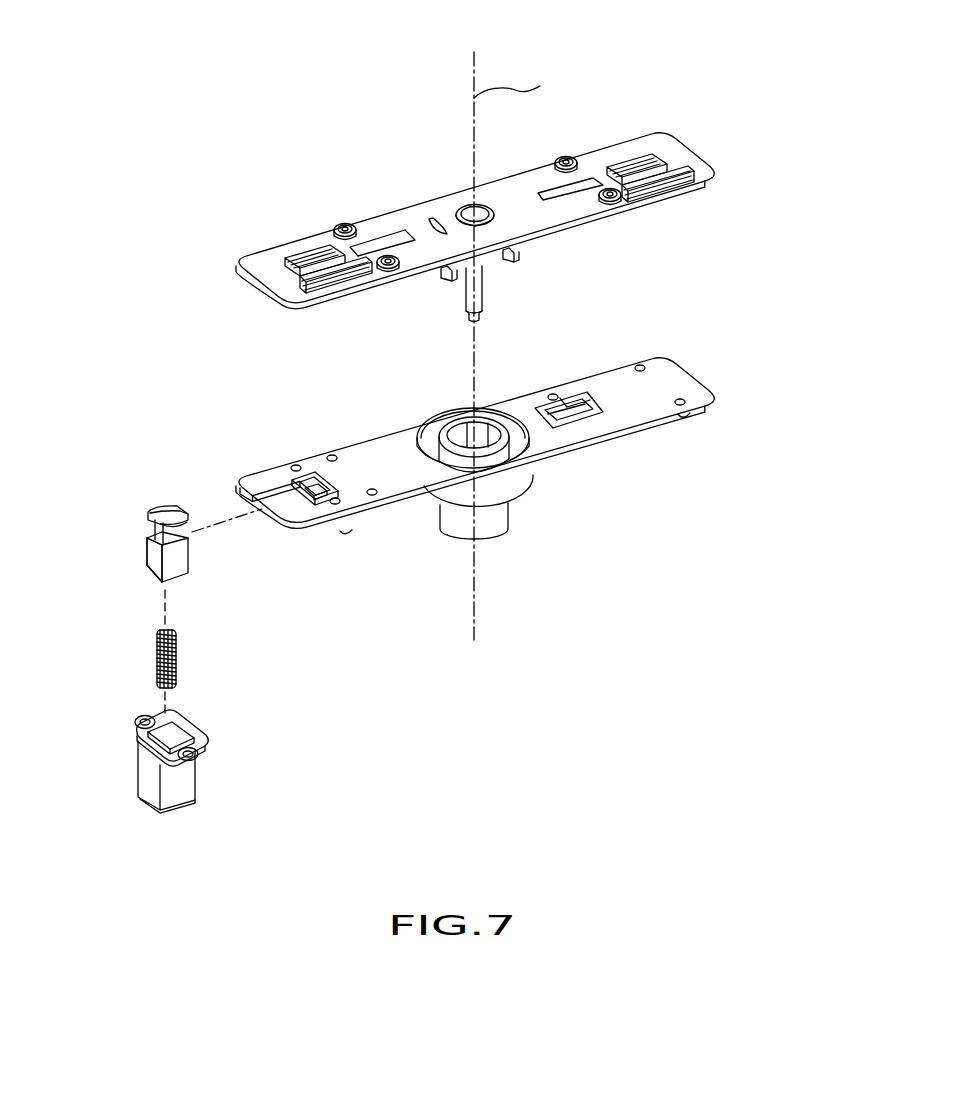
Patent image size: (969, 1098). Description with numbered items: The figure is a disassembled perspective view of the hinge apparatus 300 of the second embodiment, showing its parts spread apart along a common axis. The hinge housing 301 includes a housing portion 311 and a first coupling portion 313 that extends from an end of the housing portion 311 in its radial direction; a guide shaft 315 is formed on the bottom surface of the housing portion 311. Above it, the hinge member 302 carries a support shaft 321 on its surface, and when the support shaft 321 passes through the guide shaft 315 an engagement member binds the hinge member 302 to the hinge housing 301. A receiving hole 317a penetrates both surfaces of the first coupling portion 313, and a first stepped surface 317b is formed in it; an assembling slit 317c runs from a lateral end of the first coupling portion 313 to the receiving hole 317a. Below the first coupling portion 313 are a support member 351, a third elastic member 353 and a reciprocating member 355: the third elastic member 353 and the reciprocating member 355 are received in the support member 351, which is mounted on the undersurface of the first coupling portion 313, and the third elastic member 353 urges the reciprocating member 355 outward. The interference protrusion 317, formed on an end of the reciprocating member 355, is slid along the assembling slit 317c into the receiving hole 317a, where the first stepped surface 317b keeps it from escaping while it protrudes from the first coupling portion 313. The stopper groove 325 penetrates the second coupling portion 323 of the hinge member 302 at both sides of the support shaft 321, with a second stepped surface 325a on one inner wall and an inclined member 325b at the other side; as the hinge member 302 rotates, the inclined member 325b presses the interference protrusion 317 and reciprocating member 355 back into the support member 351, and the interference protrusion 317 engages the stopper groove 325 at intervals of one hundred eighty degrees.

The hinge apparatus 300 is at (392, 56).
The hinge housing 301 is at (706, 368).
The hinge member 302 is at (675, 127).
The housing portion 311 is at (508, 490).
The first coupling portion 313 is at (634, 401).
The guide shaft 315 is at (512, 490).
The interference protrusion 317 is at (160, 505).
The receiving hole 317a is at (338, 487).
The first stepped surface 317b is at (307, 470).
The assembling slit 317c is at (275, 492).
The support shaft 321 is at (483, 291).
The second coupling portion 323 is at (660, 133).
The stopper groove 325 is at (268, 258).
The second stepped surface 325a is at (303, 262).
The inclined member 325b is at (342, 281).
The support member 351 is at (146, 772).
The third elastic member 353 is at (158, 655).
The reciprocating member 355 is at (148, 547).